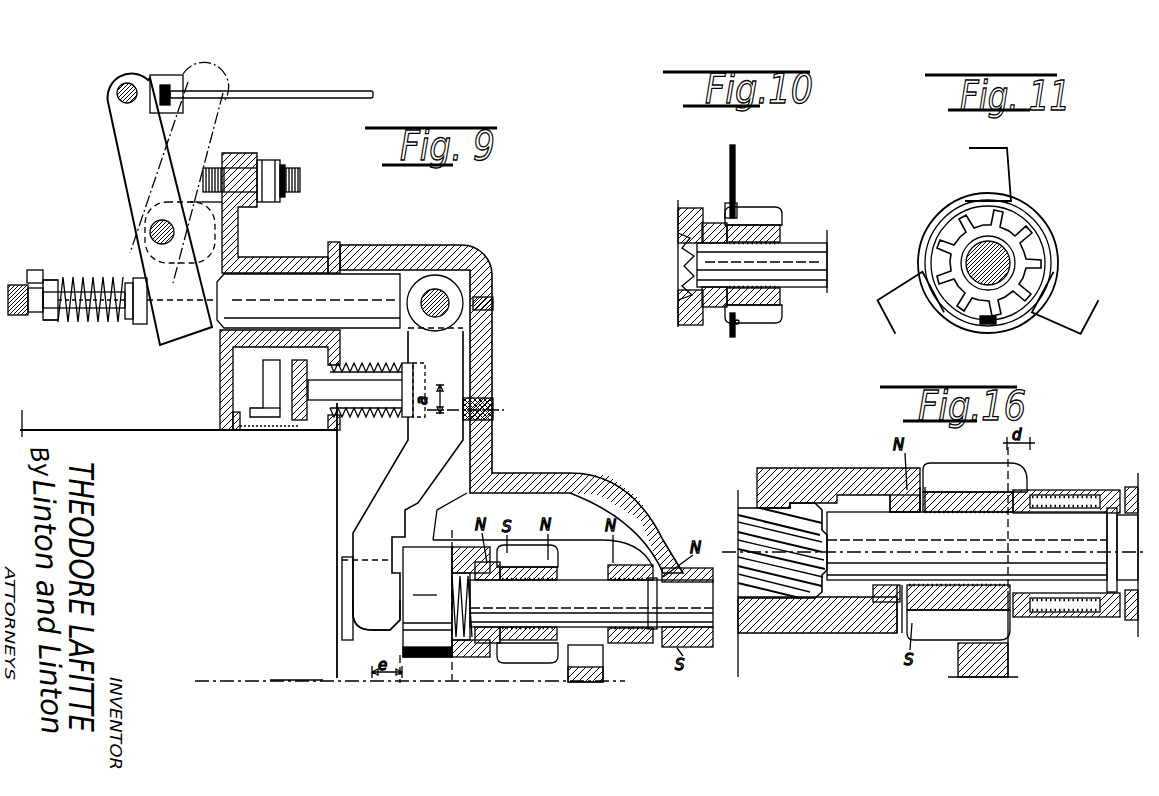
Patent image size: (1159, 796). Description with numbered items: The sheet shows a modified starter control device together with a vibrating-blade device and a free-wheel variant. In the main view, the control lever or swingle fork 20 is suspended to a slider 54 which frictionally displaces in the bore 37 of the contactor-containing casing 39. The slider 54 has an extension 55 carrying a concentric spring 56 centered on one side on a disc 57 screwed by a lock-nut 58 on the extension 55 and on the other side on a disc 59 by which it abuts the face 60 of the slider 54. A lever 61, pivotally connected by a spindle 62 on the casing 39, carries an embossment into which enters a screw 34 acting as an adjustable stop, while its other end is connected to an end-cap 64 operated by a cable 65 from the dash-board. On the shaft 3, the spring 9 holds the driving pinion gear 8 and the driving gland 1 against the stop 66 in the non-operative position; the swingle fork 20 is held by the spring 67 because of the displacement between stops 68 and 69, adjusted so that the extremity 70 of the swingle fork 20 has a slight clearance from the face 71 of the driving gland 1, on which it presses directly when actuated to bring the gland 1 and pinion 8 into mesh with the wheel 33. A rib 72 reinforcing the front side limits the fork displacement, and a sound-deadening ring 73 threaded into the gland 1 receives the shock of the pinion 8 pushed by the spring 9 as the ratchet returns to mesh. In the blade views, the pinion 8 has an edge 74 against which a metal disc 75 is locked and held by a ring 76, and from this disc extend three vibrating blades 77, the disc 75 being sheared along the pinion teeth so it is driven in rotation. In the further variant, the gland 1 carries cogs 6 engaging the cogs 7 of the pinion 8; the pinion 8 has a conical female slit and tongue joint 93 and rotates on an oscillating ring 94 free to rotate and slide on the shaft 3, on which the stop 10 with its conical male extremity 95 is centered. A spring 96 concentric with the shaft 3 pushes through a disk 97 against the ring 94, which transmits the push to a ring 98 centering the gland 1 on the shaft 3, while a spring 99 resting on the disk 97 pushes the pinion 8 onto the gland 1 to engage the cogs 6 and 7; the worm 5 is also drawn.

In FIG. 9, the lever 61 is at (130, 150).
In FIG. 9, the end-cap 64 is at (147, 80).
In FIG. 9, the cable 65 is at (287, 91).
In FIG. 9, the spindle 62 is at (150, 232).
In FIG. 9, the lock-nut 58 is at (32, 280).
In FIG. 9, the disc 57 is at (43, 315).
In FIG. 9, the spring 56 is at (78, 322).
In FIG. 9, the extension 55 is at (110, 305).
In FIG. 9, the disc 59 is at (143, 312).
In FIG. 9, the face 60 is at (207, 338).
In FIG. 9, the screw 34 is at (238, 165).
In FIG. 9, the casing 39 is at (260, 265).
In FIG. 9, the bore 37 is at (333, 258).
In FIG. 9, the slider 54 is at (297, 300).
In FIG. 9, the stop 69 is at (490, 295).
In FIG. 9, the stop 68 is at (490, 403).
In FIG. 9, the spring 67 is at (353, 417).
In FIG. 9, the swingle fork 20 is at (402, 479).
In FIG. 9, the rib 72 is at (563, 507).
In FIG. 9, the stop 66 is at (342, 577).
In FIG. 9, the extremity 70 is at (362, 613).
In FIG. 9, the face 71 is at (403, 648).
In FIG. 9, the ring 73 is at (490, 653).
In FIG. 9, the driving gland 1 is at (457, 614).
In FIG. 16, the driving gland 1 is at (779, 495).
In FIG. 9, the spring 9 is at (576, 582).
In FIG. 9, the driving pinion gear 8 is at (519, 653).
In FIG. 10, the driving pinion gear 8 is at (765, 218).
In FIG. 11, the driving pinion gear 8 is at (1008, 233).
In FIG. 16, the driving pinion gear 8 is at (961, 477).
In FIG. 9, the wheel 33 is at (603, 673).
In FIG. 16, the wheel 33 is at (977, 663).
In FIG. 10, the vibrating blades 77 is at (735, 163).
In FIG. 11, the vibrating blades 77 is at (993, 166).
In FIG. 10, the ring 76 is at (735, 212).
In FIG. 11, the ring 76 is at (992, 323).
In FIG. 10, the edge 74 is at (722, 313).
In FIG. 10, the metal disc 75 is at (737, 330).
In FIG. 11, the metal disc 75 is at (945, 218).
In FIG. 16, the worm 5 is at (812, 517).
In FIG. 16, the cogs 6 is at (922, 493).
In FIG. 16, the spring 99 is at (1022, 508).
In FIG. 16, the disk 97 is at (1082, 512).
In FIG. 16, the shaft 3 is at (1070, 537).
In FIG. 16, the stop 10 is at (1103, 618).
In FIG. 16, the ring 98 is at (883, 602).
In FIG. 16, the cogs 7 is at (898, 608).
In FIG. 16, the oscillating ring 94 is at (940, 610).
In FIG. 16, the slit and tongue joint 93 is at (1010, 615).
In FIG. 16, the conical male extremity 95 is at (1013, 605).
In FIG. 16, the spring 96 is at (1060, 593).